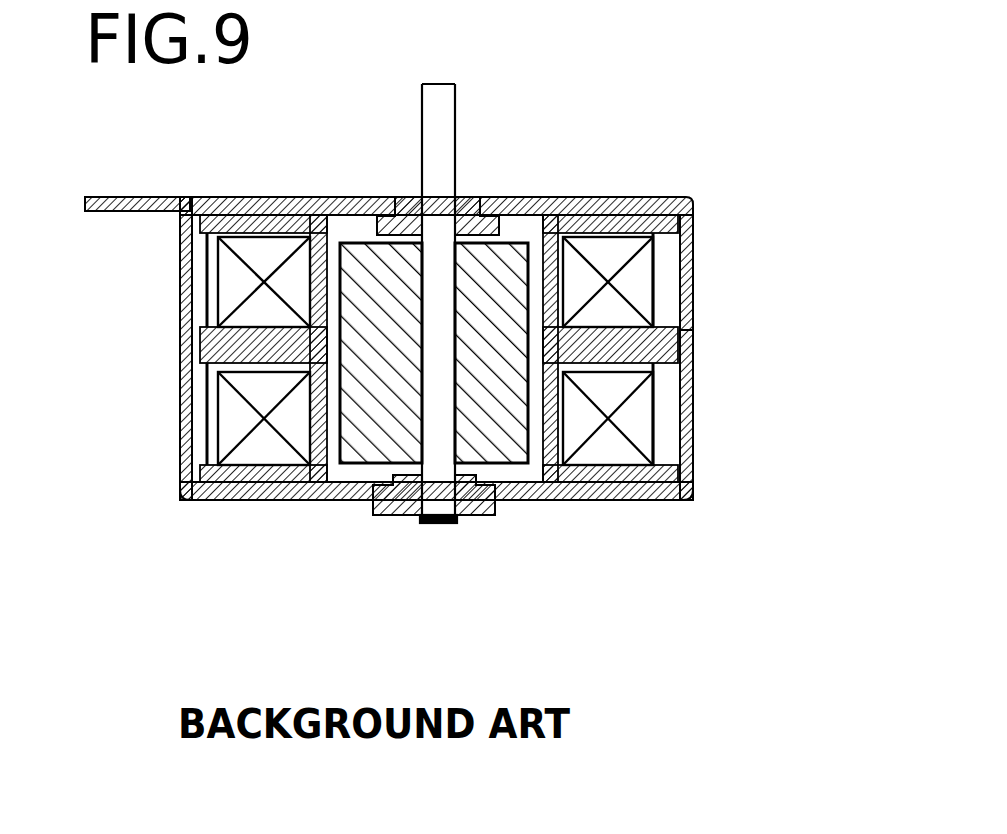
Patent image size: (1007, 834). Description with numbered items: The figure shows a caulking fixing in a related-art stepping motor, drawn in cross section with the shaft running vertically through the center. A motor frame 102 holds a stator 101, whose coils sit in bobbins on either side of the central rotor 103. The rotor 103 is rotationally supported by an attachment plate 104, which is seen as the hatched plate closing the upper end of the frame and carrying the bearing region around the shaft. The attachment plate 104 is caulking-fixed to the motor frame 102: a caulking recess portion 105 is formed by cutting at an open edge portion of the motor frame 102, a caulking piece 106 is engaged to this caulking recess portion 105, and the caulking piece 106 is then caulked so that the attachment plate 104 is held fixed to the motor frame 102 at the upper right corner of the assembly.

The stator 101 is at (595, 455).
The motor frame 102 is at (692, 402).
The rotor 103 is at (368, 432).
The attachment plate 104 is at (523, 207).
The caulking recess portion 105 is at (690, 197).
The caulking piece 106 is at (697, 217).